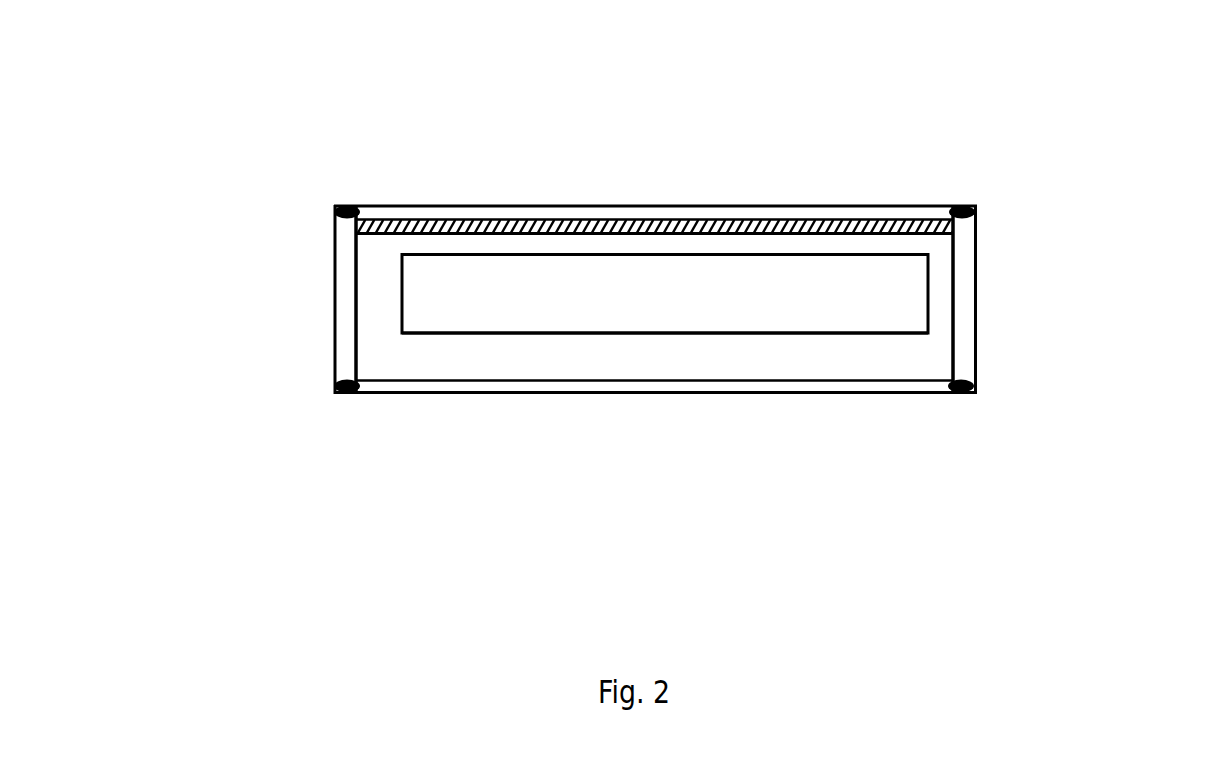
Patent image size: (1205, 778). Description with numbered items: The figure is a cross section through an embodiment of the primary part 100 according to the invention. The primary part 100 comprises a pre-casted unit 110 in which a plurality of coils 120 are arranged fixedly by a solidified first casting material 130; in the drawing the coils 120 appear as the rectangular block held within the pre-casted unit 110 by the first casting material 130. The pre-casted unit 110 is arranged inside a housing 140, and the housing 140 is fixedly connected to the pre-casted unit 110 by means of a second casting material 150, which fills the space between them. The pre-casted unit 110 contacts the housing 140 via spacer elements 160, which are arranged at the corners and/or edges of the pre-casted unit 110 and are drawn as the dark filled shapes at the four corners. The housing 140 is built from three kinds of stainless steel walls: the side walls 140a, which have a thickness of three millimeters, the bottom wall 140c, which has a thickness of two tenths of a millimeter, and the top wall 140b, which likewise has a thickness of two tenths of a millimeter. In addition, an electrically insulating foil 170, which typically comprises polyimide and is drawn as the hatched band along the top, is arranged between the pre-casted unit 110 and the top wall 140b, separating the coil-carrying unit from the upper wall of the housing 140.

The primary part 100 is at (626, 304).
The pre-casted unit 110 is at (566, 392).
The coils 120 is at (789, 246).
The first casting material 130 is at (721, 370).
The housing 140 is at (626, 320).
The side walls 140a is at (322, 323).
The top wall 140b is at (506, 196).
The bottom wall 140c is at (464, 402).
The second casting material 150 is at (330, 296).
The spacer elements 160 is at (346, 192).
The electrically insulating foil 170 is at (724, 222).